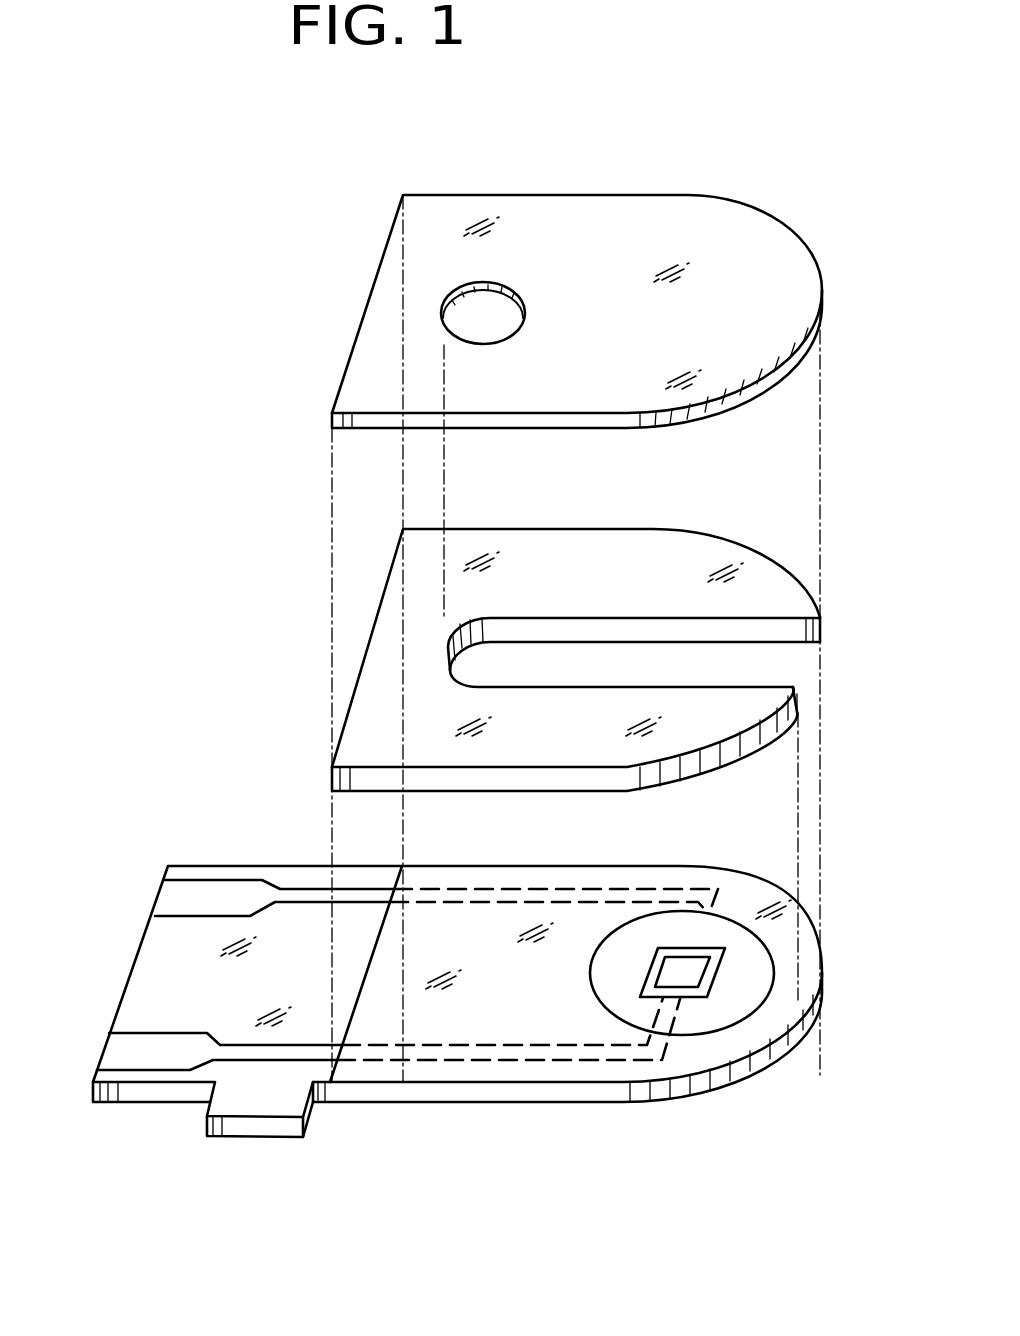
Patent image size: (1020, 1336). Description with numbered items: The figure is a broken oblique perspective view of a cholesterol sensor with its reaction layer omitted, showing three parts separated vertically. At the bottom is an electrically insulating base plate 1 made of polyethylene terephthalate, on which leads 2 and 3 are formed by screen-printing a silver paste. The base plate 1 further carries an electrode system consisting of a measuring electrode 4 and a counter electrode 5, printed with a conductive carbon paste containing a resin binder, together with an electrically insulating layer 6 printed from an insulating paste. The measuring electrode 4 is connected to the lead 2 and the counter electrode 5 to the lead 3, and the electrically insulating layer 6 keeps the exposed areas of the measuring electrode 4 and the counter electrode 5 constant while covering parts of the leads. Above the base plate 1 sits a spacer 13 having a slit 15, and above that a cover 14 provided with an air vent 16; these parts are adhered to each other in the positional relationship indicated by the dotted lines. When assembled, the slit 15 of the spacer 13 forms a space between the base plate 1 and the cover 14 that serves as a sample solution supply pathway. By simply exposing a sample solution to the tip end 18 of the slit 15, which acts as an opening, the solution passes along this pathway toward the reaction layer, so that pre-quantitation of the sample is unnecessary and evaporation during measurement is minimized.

The electrically insulating base plate 1 is at (162, 968).
The lead 2 is at (115, 1052).
The lead 3 is at (172, 898).
The measuring electrode 4 is at (687, 975).
The counter electrode 5 is at (720, 928).
The electrically insulating layer 6 is at (473, 1022).
The spacer 13 is at (374, 675).
The cover 14 is at (368, 352).
The slit 15 is at (625, 630).
The air vent 16 is at (443, 303).
The tip end 18 is at (778, 668).